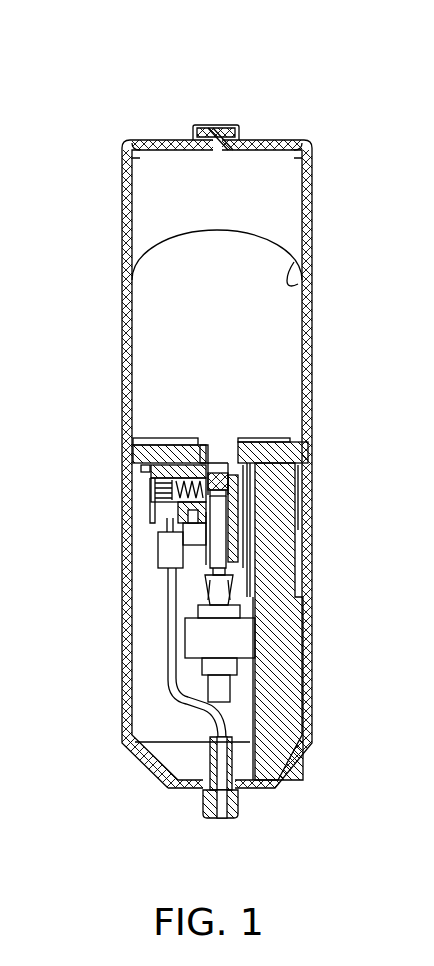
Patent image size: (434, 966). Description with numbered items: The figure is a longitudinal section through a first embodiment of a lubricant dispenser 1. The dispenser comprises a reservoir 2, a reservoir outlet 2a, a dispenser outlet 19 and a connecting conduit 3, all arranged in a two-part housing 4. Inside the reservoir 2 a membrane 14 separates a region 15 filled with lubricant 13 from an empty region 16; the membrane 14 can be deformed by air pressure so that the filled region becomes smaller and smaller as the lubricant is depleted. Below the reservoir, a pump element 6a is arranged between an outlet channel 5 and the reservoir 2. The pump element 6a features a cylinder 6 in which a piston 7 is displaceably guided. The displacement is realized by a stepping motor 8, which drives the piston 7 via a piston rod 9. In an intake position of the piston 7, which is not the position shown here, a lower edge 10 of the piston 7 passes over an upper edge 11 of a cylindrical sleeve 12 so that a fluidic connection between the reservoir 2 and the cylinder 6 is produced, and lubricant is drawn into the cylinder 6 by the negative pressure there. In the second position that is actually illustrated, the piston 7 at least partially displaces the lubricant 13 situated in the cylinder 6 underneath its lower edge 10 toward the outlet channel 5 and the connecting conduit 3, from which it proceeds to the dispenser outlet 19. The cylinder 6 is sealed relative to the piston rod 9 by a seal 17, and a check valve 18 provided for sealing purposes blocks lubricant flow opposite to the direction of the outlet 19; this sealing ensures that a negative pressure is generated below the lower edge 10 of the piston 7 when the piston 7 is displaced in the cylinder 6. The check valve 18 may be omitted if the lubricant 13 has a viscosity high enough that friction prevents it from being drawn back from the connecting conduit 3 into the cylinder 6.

The lubricant dispenser 1 is at (151, 71).
The reservoir 2 is at (97, 238).
The reservoir outlet 2a is at (209, 440).
The connecting conduit 3 is at (165, 607).
The two-part housing 4 is at (125, 553).
The outlet channel 5 is at (170, 700).
The cylinder 6 is at (227, 463).
The pump element 6a is at (257, 530).
The piston 7 is at (230, 487).
The stepping motor 8 is at (237, 643).
The piston rod 9 is at (220, 547).
The lower edge 10 is at (228, 492).
The upper edge 11 is at (200, 466).
The cylindrical sleeve 12 is at (227, 477).
The lubricant 13 is at (140, 327).
The membrane 14 is at (303, 278).
The region filled with lubricant 15 is at (282, 328).
The empty region 16 is at (290, 233).
The seal 17 is at (208, 522).
The spring 18 is at (182, 502).
The dispenser outlet 19 is at (197, 802).